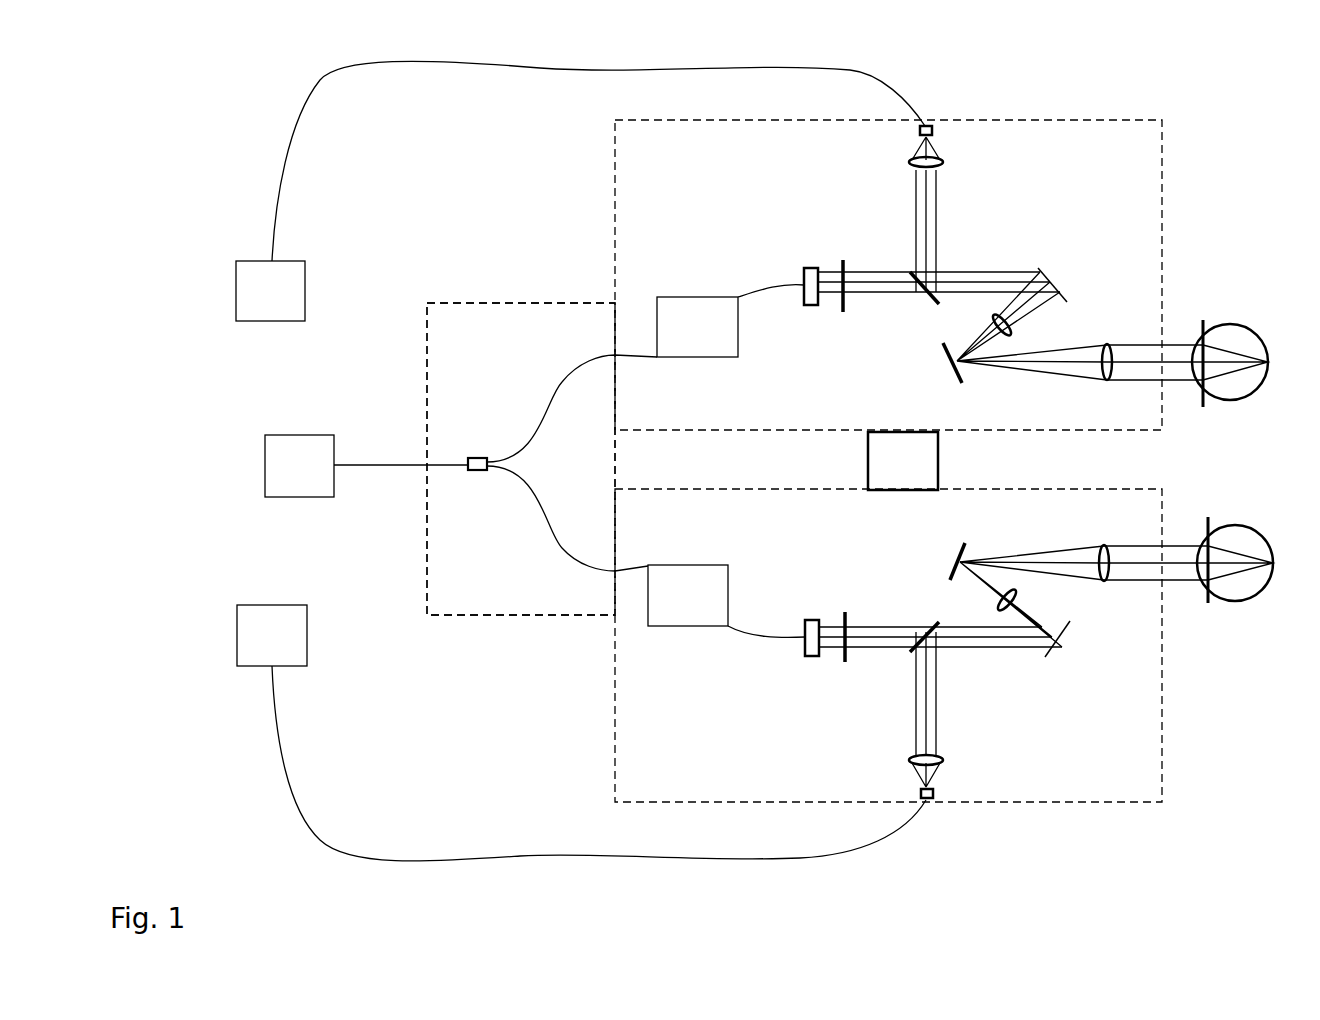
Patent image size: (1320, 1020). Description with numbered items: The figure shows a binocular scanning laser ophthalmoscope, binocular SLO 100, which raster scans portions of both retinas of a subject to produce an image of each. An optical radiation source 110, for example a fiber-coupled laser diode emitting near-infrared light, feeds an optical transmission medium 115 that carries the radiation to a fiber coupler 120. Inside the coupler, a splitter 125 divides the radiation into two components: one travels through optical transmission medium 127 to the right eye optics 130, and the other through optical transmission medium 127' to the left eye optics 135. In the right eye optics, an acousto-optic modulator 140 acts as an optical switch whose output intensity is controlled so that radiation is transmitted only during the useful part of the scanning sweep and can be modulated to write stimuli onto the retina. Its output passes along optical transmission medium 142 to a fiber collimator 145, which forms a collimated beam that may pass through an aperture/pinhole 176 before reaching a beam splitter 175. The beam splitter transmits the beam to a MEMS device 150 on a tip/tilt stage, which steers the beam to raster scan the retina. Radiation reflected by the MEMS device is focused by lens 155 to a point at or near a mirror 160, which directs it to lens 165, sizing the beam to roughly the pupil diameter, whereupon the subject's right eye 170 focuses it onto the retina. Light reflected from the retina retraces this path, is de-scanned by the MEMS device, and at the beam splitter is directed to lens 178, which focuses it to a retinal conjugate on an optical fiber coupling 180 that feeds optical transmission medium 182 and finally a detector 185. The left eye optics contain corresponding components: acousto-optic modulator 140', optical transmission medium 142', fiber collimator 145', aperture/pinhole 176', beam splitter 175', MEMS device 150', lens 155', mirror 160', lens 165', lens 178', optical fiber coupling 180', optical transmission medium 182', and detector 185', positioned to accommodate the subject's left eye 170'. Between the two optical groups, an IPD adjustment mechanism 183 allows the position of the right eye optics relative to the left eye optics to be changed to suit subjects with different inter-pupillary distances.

The binocular SLO 100 is at (145, 58).
The optical radiation source 110 is at (296, 437).
The optical transmission medium 115 is at (392, 466).
The fiber coupler 120 is at (533, 616).
The splitter 125 is at (472, 471).
The optical transmission medium 127 is at (572, 408).
The optical transmission medium 127' is at (567, 518).
The right eye optics 130 is at (1150, 119).
The left eye optics 135 is at (1145, 808).
The acousto-optic modulator 140 is at (697, 343).
The acousto-optic modulator 140' is at (688, 582).
The optical transmission medium 142 is at (763, 273).
The optical transmission medium 142' is at (760, 648).
The fiber collimator 145 is at (794, 268).
The fiber collimator 145' is at (797, 656).
The MEMS device 150 is at (1037, 312).
The MEMS device 150' is at (1038, 615).
The lens 155 is at (1033, 330).
The lens 155' is at (1038, 598).
The mirror 160 is at (996, 363).
The mirror 160' is at (997, 559).
The lens 165 is at (1152, 344).
The lens 165' is at (1153, 545).
The right eye 170 is at (1239, 347).
The left eye 170' is at (1247, 575).
The beam splitter 175 is at (908, 250).
The beam splitter 175' is at (917, 669).
The aperture/pinhole 176 is at (930, 304).
The aperture/pinhole 176' is at (933, 617).
The lens 178 is at (895, 161).
The lens 178' is at (960, 760).
The optical fiber coupling 180 is at (894, 139).
The optical fiber coupling 180' is at (961, 781).
The optical transmission medium 182 is at (598, 146).
The optical transmission medium 182' is at (599, 779).
The IPD adjustment mechanism 183 is at (958, 461).
The detector 185 is at (224, 291).
The detector 185' is at (225, 635).